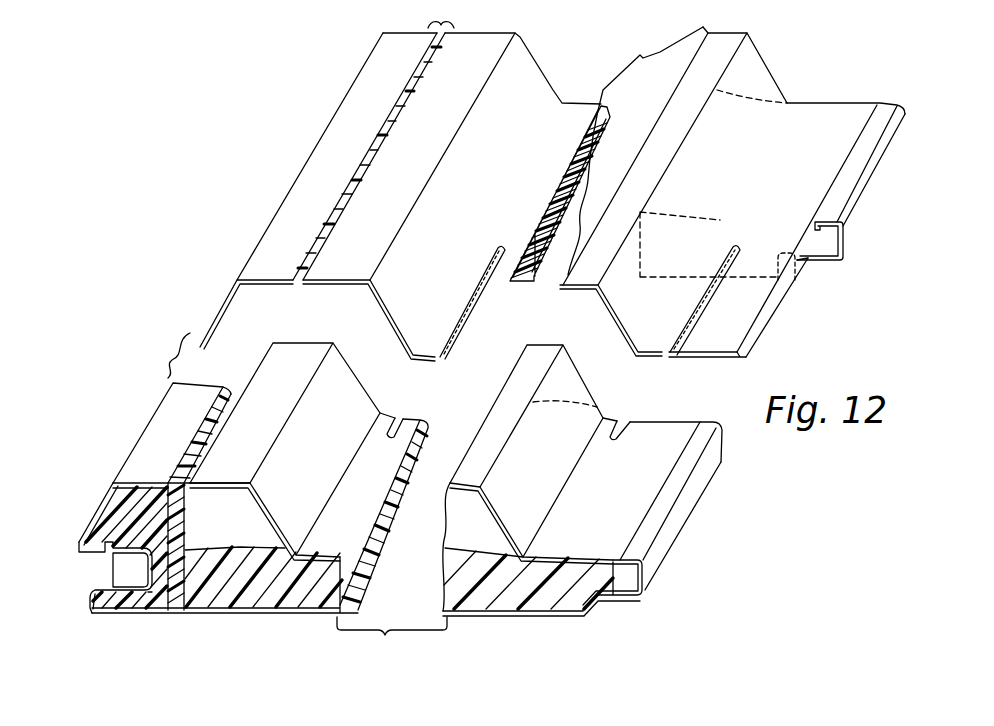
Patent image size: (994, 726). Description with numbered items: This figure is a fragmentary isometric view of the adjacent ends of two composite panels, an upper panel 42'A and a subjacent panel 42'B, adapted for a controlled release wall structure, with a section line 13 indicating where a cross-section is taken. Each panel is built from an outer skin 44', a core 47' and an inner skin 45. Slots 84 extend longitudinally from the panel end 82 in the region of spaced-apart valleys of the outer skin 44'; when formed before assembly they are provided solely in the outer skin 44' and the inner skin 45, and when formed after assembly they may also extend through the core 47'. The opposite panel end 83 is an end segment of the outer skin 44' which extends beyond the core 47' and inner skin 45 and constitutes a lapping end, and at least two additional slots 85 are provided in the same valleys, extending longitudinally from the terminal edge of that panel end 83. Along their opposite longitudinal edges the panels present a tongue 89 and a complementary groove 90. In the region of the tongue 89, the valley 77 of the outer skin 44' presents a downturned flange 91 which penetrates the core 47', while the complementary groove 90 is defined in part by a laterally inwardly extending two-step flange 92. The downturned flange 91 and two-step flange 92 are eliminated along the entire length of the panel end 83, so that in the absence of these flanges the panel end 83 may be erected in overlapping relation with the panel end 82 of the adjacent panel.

The subjacent panel 42'B is at (389, 200).
The upper panel 42'A is at (636, 549).
The outer skin 44' is at (259, 321).
The valley 77 is at (565, 134).
The slot 85 is at (466, 276).
The downturned flange 91 is at (820, 222).
The core 47' is at (497, 448).
The inner skin 45 is at (812, 262).
The panel end 83 is at (735, 327).
The slot 84 is at (400, 426).
The panel end 82 is at (658, 473).
The tongue 89 is at (658, 557).
The two-step flange 92 is at (103, 563).
The groove 90 is at (110, 572).
The section line 13- 13 is at (597, 82).